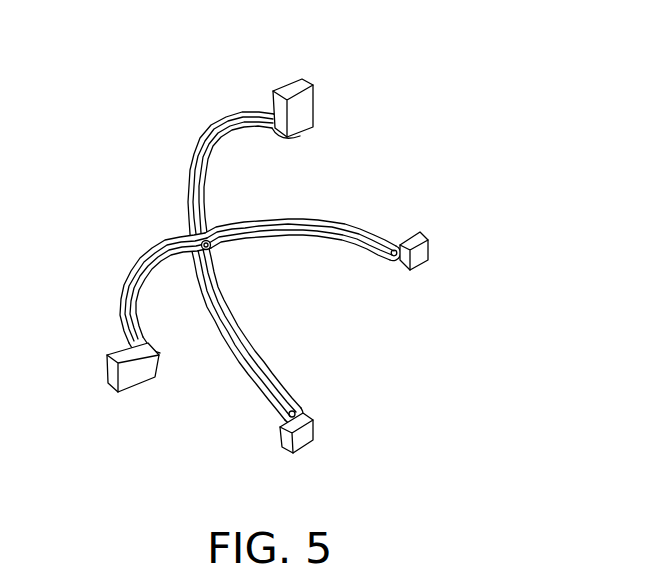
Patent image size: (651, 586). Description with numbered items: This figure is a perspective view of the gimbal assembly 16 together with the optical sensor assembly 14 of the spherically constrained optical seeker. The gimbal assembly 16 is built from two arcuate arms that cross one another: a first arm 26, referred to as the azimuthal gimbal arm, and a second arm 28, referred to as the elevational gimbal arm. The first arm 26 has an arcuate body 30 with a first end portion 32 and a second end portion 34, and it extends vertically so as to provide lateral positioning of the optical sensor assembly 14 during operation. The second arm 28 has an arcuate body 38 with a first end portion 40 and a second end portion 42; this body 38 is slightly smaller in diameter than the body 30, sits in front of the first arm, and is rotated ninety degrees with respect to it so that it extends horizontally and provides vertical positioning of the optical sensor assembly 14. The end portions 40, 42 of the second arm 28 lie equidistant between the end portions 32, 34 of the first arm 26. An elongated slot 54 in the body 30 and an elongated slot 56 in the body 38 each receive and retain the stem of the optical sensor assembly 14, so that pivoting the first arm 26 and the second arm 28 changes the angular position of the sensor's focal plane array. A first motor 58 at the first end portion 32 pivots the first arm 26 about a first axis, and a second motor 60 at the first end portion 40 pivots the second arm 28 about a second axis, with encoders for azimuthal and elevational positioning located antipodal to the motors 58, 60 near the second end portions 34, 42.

The optical sensor assembly 14 is at (232, 258).
The gimbal assembly 16 is at (251, 258).
The first arm 26 is at (226, 135).
The second arm 28 is at (327, 207).
The arcuate body 30 is at (223, 345).
The first end portion 32 is at (268, 112).
The second end portion 34 is at (273, 422).
The arcuate body 38 is at (124, 294).
The first end portion 40 is at (126, 338).
The second end portion 42 is at (383, 256).
The slot 54 is at (200, 187).
The slot 56 is at (300, 228).
The first motor 58 is at (305, 95).
The second motor 60 is at (127, 375).